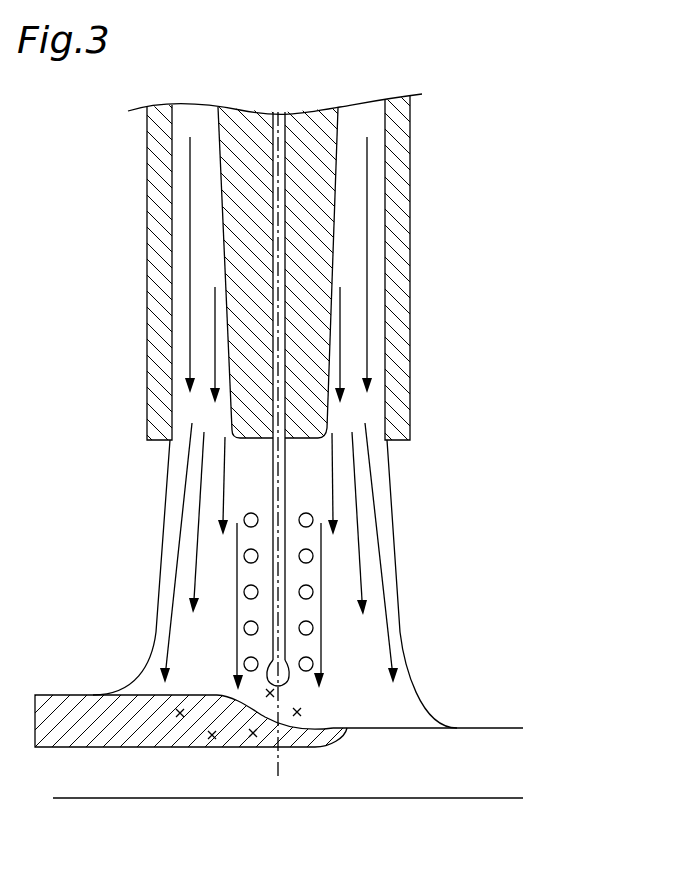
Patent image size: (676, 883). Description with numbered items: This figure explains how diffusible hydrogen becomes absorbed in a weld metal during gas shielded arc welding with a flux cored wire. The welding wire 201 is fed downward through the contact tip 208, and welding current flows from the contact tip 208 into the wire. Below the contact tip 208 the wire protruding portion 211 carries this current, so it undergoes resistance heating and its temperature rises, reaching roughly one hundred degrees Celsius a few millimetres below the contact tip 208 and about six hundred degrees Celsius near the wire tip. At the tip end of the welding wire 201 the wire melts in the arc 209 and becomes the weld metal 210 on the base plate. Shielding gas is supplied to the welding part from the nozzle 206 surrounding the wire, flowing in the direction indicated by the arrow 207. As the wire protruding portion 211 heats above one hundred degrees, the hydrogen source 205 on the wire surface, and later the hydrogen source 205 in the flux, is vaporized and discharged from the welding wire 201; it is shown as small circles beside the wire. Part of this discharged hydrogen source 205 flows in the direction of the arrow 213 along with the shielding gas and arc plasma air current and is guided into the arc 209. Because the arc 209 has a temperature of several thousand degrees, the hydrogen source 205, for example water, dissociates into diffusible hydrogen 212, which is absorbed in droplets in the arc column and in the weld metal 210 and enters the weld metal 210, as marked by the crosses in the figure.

The welding wire 201 is at (285, 210).
The hydrogen source 205 is at (313, 628).
The nozzle 206 is at (410, 137).
The arrow 207 is at (367, 292).
The contact tip 208 is at (312, 413).
The arc 209 is at (312, 706).
The weld metal 210 is at (140, 747).
The wire protruding portion 211 is at (287, 568).
The diffusible hydrogen 212 is at (212, 740).
The arrow 213 is at (320, 649).